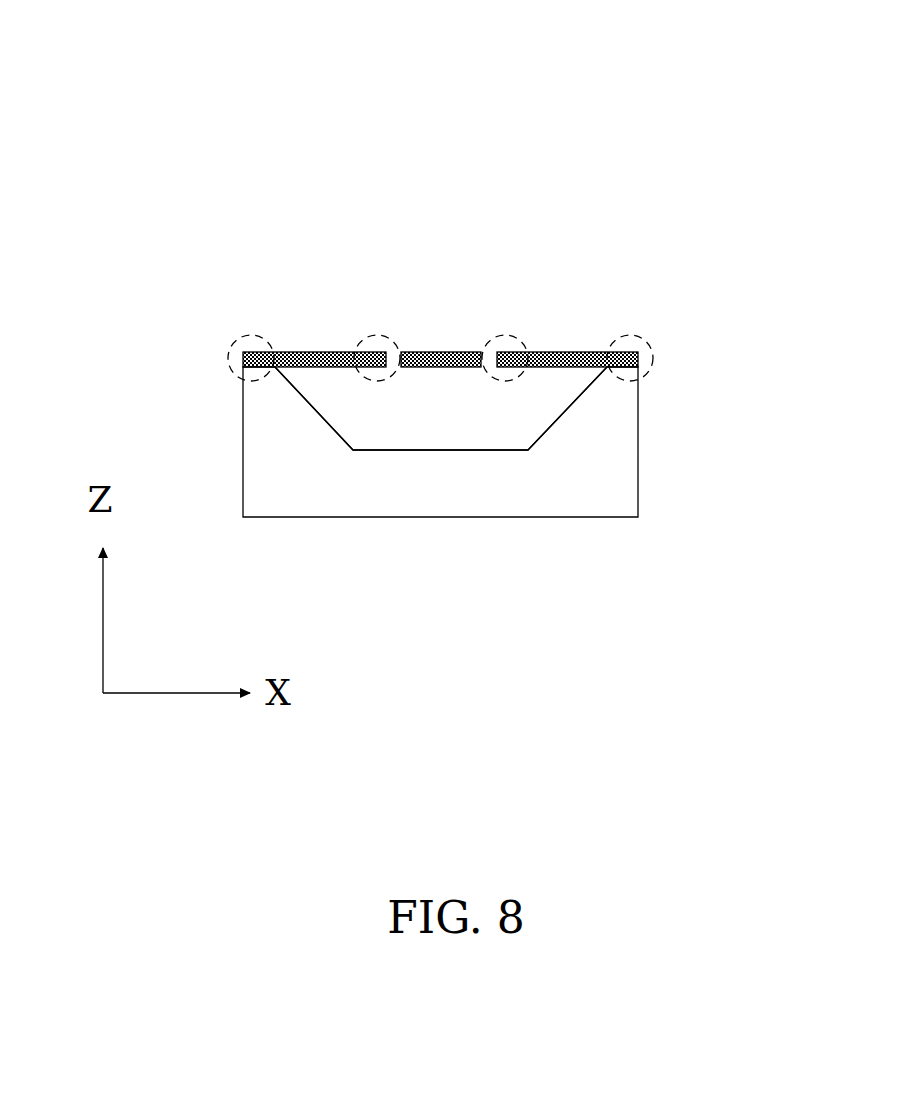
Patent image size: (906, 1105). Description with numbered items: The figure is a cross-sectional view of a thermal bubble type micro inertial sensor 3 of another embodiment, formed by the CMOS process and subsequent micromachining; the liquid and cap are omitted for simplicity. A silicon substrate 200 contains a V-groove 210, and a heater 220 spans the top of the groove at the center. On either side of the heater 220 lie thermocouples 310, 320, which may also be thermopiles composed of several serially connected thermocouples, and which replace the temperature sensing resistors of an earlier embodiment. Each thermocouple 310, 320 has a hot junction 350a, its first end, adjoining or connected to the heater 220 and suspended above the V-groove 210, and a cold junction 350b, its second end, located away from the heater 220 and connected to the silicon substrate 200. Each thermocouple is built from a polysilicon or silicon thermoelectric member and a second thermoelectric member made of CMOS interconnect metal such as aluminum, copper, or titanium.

The thermal bubble type micro inertial sensor 3 is at (705, 137).
The silicon substrate 200 is at (413, 492).
The V-groove 210 is at (413, 419).
The heater 220 is at (430, 357).
The thermocouple 310 is at (572, 355).
The thermocouple 320 is at (312, 353).
The hot junction 350a is at (370, 335).
The cold junction 350b is at (227, 357).